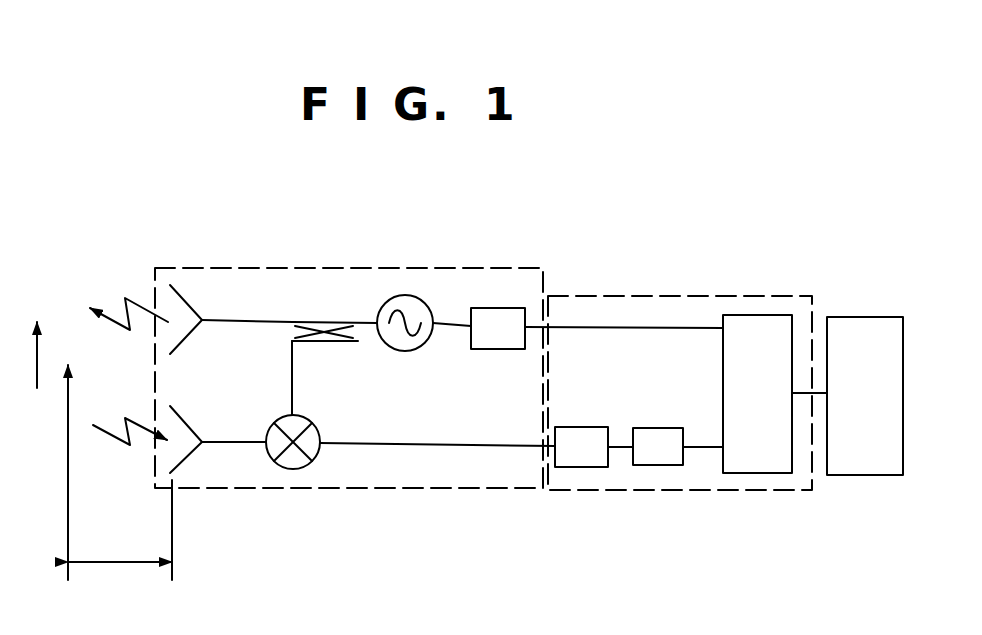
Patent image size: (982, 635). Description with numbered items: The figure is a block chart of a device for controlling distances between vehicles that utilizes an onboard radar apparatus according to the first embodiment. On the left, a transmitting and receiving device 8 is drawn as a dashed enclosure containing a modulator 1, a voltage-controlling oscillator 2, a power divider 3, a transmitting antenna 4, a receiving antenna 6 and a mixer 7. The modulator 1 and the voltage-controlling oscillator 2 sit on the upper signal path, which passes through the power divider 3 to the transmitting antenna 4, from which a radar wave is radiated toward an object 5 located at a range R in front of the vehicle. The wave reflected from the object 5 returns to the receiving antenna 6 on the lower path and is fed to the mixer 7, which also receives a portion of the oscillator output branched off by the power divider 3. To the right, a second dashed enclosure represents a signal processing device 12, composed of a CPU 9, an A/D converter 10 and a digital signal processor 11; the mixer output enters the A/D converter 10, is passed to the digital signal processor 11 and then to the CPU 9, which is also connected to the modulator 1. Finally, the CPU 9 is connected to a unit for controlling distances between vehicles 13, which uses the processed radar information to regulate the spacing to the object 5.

The modulator 1 is at (507, 303).
The voltage-controlling oscillator 2 is at (433, 300).
The power divider 3 is at (333, 315).
The transmitting antenna 4 is at (193, 295).
The object 5 is at (99, 451).
The receiving antenna 6 is at (193, 417).
The mixer 7 is at (323, 420).
The transmitting and receiving device 8 is at (548, 270).
The CPU 9 is at (753, 312).
The A/D converter 10 is at (583, 468).
The digital signal processor 11 is at (658, 468).
The signal processing device 12 is at (815, 295).
The unit for controlling distances between vehicles 13 is at (858, 312).